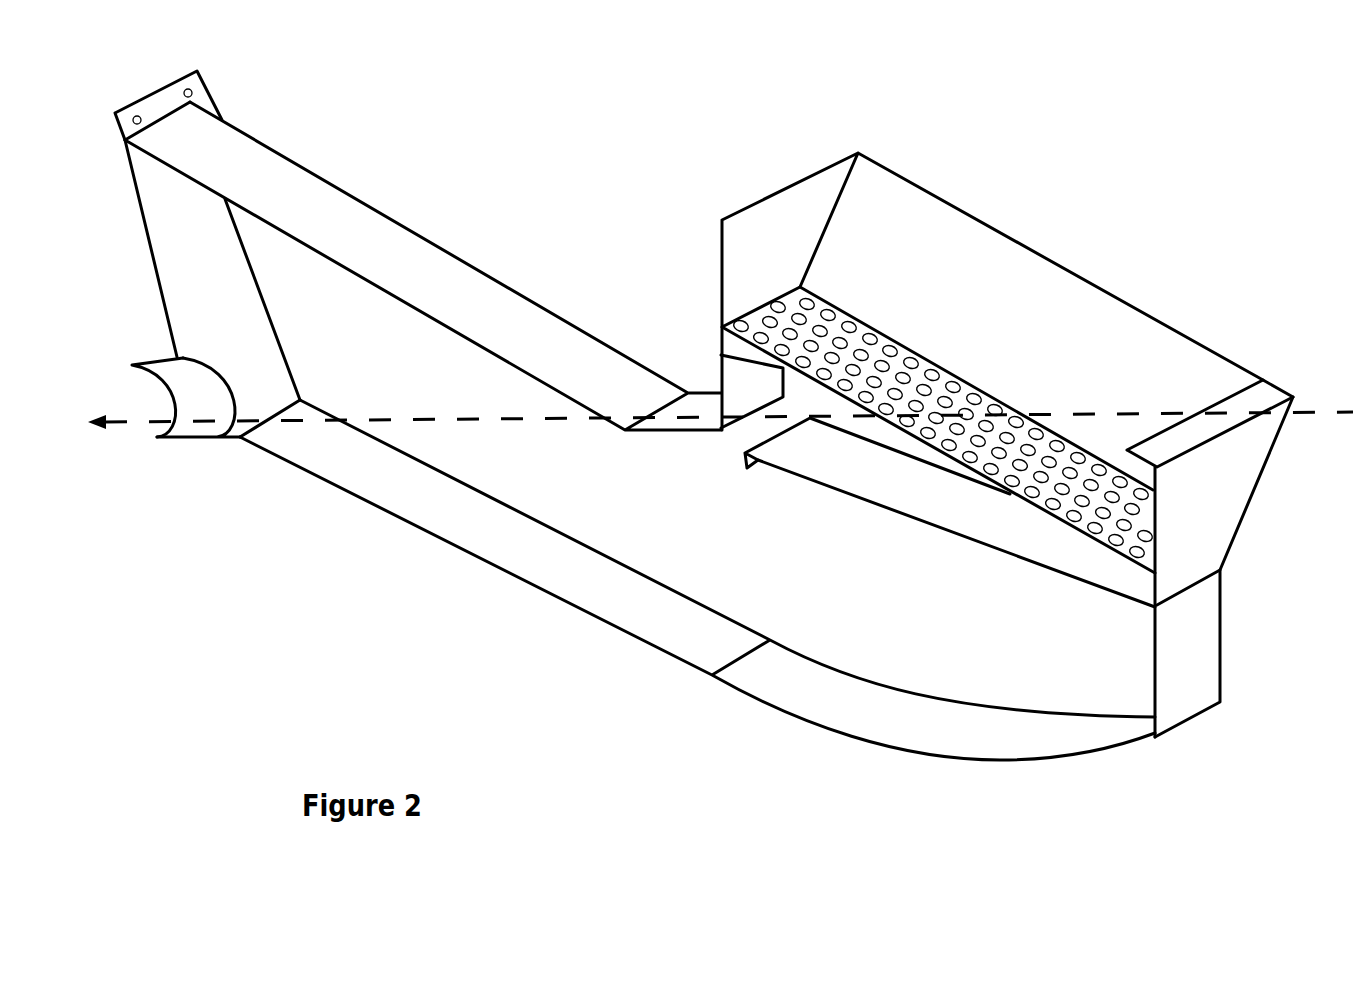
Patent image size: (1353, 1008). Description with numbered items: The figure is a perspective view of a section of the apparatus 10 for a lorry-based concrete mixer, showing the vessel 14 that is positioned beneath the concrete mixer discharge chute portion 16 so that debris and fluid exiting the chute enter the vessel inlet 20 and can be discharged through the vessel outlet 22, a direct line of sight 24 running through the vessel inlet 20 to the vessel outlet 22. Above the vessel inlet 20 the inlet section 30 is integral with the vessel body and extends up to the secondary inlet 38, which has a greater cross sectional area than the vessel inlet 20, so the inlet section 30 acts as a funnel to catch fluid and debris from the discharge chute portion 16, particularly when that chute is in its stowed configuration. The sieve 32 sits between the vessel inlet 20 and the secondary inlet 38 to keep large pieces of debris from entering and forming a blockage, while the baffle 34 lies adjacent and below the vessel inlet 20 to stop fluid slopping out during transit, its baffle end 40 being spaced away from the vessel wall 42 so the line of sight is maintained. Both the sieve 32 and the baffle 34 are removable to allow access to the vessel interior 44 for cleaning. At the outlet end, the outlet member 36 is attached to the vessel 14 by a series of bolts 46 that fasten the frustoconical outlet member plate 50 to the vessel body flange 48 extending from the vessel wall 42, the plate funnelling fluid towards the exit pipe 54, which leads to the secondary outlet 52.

The apparatus 10 is at (543, 205).
The vessel 14 is at (408, 250).
The concrete mixer discharge chute portion 16 is at (650, 647).
The vessel inlet 20 is at (1133, 582).
The vessel outlet 22 is at (273, 377).
The direct line of sight 24 is at (920, 375).
The inlet section 30 is at (1210, 503).
The sieve 32 is at (1132, 408).
The baffle 34 is at (927, 523).
The outlet member 36 is at (190, 305).
The secondary inlet 38 is at (940, 233).
The baffle end 40 is at (747, 463).
The vessel wall 42 is at (745, 387).
The vessel interior 44 is at (466, 404).
The bolts 46 is at (203, 83).
The vessel body flange 48 is at (158, 103).
The outlet member plate 50 is at (188, 250).
The secondary outlet 52 is at (153, 397).
The exit pipe 54 is at (197, 423).